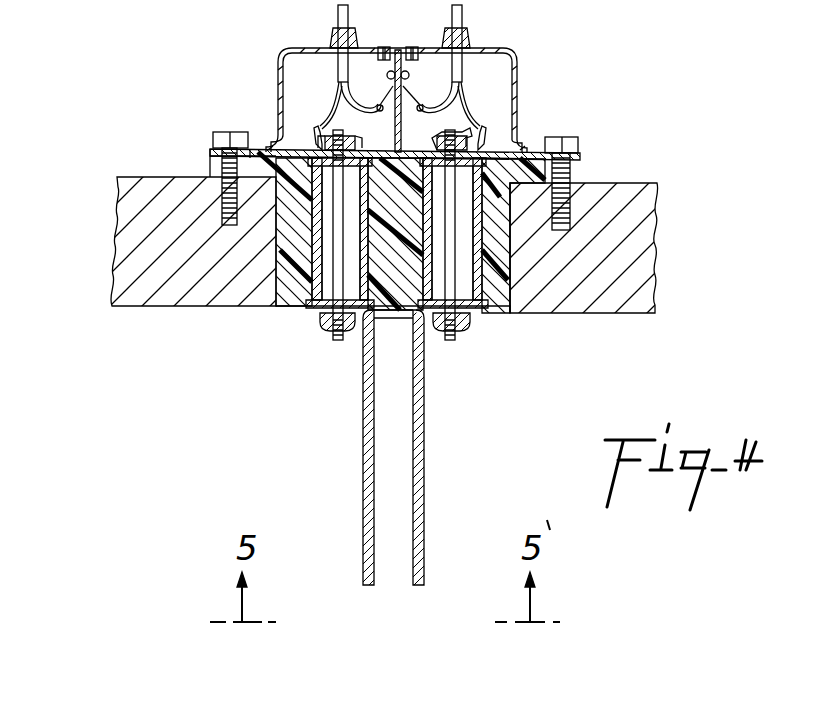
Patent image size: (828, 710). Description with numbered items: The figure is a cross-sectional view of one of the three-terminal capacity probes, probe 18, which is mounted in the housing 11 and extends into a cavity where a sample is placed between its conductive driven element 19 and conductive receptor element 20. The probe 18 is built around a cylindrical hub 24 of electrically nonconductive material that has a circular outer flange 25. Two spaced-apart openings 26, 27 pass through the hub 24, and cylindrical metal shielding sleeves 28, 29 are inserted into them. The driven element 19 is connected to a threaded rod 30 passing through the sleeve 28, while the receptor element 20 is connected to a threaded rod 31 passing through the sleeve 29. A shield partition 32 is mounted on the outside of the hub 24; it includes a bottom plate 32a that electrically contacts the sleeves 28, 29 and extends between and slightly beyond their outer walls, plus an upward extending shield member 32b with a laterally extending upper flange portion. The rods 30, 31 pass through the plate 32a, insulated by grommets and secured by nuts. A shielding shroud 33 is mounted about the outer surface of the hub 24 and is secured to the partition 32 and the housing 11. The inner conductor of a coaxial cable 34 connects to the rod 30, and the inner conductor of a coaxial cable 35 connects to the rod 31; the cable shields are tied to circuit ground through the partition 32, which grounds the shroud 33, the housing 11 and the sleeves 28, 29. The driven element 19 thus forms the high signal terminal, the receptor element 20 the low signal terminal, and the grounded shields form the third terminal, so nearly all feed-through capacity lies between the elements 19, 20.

The housing 11 is at (120, 213).
The three-terminal capacity probe 18 is at (538, 222).
The conductive driven element 19 is at (425, 435).
The conductive receptor element 20 is at (363, 405).
The cylindrical hub 24 is at (545, 300).
The circular outer flange 25 is at (580, 168).
The opening 26 is at (478, 318).
The opening 27 is at (300, 312).
The cylindrical metal shielding sleeve 28 is at (505, 312).
The cylindrical metal shielding sleeve 29 is at (286, 308).
The threaded rod 30 is at (450, 345).
The threaded rod 31 is at (338, 340).
The shield partition 32 is at (398, 50).
The bottom plate 32a is at (472, 130).
The upward extending shield member 32b is at (402, 131).
The shielding shroud 33 is at (518, 78).
The coaxial cable 34 is at (464, 18).
The coaxial cable 35 is at (338, 18).